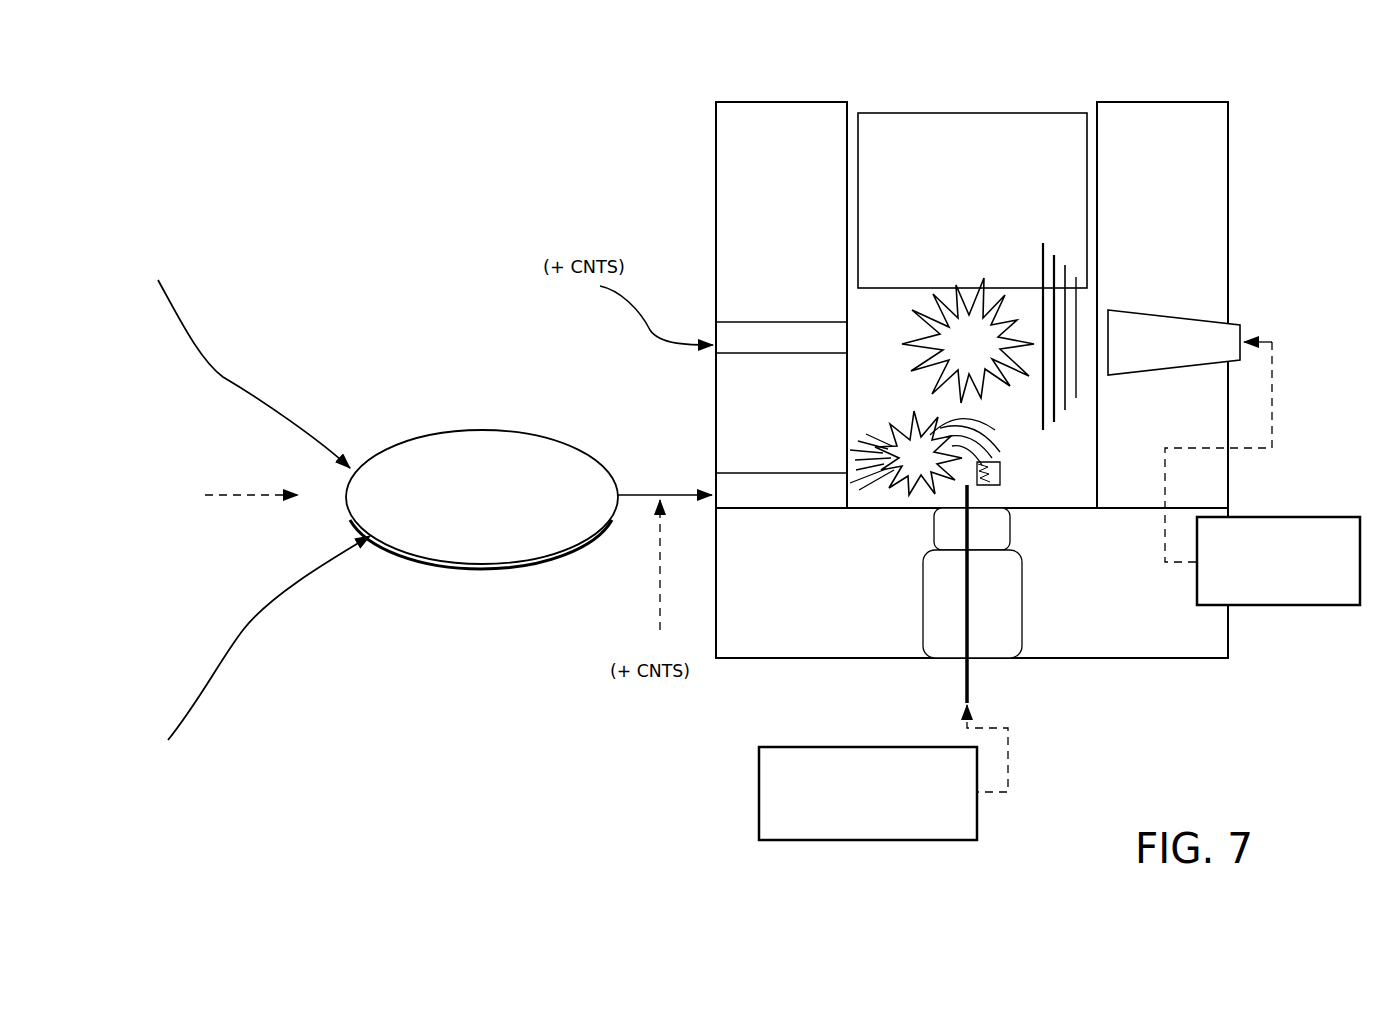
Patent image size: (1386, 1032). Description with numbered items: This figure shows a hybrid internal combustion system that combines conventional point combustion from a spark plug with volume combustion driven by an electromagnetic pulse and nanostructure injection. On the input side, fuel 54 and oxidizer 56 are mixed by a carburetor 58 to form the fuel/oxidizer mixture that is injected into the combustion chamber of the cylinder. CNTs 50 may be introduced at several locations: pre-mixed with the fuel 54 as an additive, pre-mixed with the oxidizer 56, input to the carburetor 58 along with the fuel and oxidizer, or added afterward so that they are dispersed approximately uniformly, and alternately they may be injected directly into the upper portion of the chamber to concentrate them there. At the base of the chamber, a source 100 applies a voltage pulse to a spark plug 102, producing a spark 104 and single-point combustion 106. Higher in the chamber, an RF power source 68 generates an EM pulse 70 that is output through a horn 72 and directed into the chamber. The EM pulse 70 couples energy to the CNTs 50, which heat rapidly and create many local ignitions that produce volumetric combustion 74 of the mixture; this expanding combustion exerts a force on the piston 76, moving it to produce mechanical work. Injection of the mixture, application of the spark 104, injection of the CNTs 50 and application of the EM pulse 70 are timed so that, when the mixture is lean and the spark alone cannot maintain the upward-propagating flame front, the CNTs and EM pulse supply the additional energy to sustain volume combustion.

The CNTs 50 is at (222, 401).
The fuel 54 is at (254, 679).
The oxidizer 56 is at (233, 357).
The carburetor 58 is at (450, 532).
The RF power source 68 is at (1291, 607).
The EM pulse 70 is at (1078, 309).
The horn 72 is at (1181, 317).
The volumetric combustion 74 is at (948, 349).
The piston 76 is at (963, 128).
The source 100 is at (770, 800).
The spark plug 102 is at (942, 618).
The spark 104 is at (1006, 484).
The single-point combustion 106 is at (893, 486).